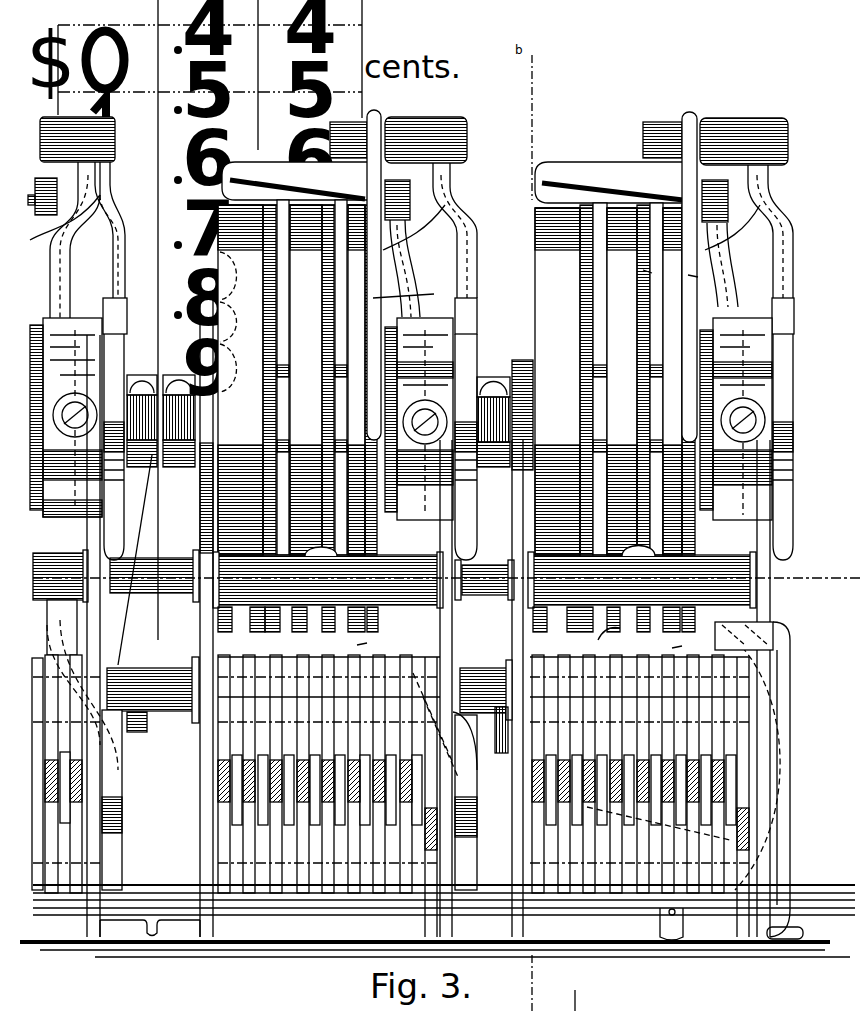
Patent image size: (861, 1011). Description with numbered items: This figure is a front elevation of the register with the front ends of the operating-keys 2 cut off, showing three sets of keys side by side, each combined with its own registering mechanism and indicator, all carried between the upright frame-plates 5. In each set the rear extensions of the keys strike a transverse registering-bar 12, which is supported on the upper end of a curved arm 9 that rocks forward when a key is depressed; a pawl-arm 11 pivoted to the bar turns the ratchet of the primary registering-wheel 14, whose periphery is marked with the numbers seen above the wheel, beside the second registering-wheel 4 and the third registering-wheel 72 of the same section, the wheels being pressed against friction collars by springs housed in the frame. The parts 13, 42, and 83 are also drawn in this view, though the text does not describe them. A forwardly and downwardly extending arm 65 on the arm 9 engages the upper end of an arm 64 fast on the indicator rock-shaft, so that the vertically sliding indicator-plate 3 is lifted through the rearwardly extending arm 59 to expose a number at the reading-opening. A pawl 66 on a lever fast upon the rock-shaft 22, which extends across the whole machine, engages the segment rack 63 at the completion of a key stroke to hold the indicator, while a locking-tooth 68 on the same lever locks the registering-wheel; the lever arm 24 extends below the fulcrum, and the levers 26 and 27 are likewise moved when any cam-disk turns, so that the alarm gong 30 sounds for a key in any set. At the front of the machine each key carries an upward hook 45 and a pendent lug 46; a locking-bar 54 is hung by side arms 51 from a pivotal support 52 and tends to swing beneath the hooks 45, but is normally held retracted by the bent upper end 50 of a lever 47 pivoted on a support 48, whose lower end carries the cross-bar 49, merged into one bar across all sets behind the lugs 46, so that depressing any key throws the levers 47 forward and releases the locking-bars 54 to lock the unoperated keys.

The operating-keys 2 is at (83, 785).
The indicator-plate 3 is at (203, 171).
The second registering-wheel 4 is at (332, 191).
The frame-plates 5 is at (428, 618).
The curved arm 9 is at (395, 241).
The pawl-arm 11 is at (532, 276).
The registering-bar 12 is at (452, 182).
The roller 13 is at (648, 133).
The primary registering-wheel 14 is at (542, 284).
The rock-shaft 22 is at (160, 672).
The lever arm 24 is at (413, 755).
The lever 26 is at (660, 926).
The lever 27 is at (289, 829).
The alarm gong 30 is at (609, 640).
The pawl 42 is at (390, 247).
The hook 45 is at (796, 769).
The pendent lug 46 is at (735, 929).
The lever 47 is at (792, 812).
The pivotal support 48 is at (495, 736).
The cross-bar 49 is at (437, 921).
The bent upper end 50 is at (744, 636).
The side arms 51 is at (390, 627).
The pivotal support 52 is at (164, 594).
The locking-bar 54 is at (378, 774).
The arm 59 is at (147, 373).
The segment rack 63 is at (127, 480).
The arm 64 is at (448, 316).
The arm 65 is at (444, 230).
The pawl 66 is at (448, 447).
The locking-tooth 68 is at (512, 646).
The third registering-wheel 72 is at (621, 188).
The register wheels 83 is at (456, 377).